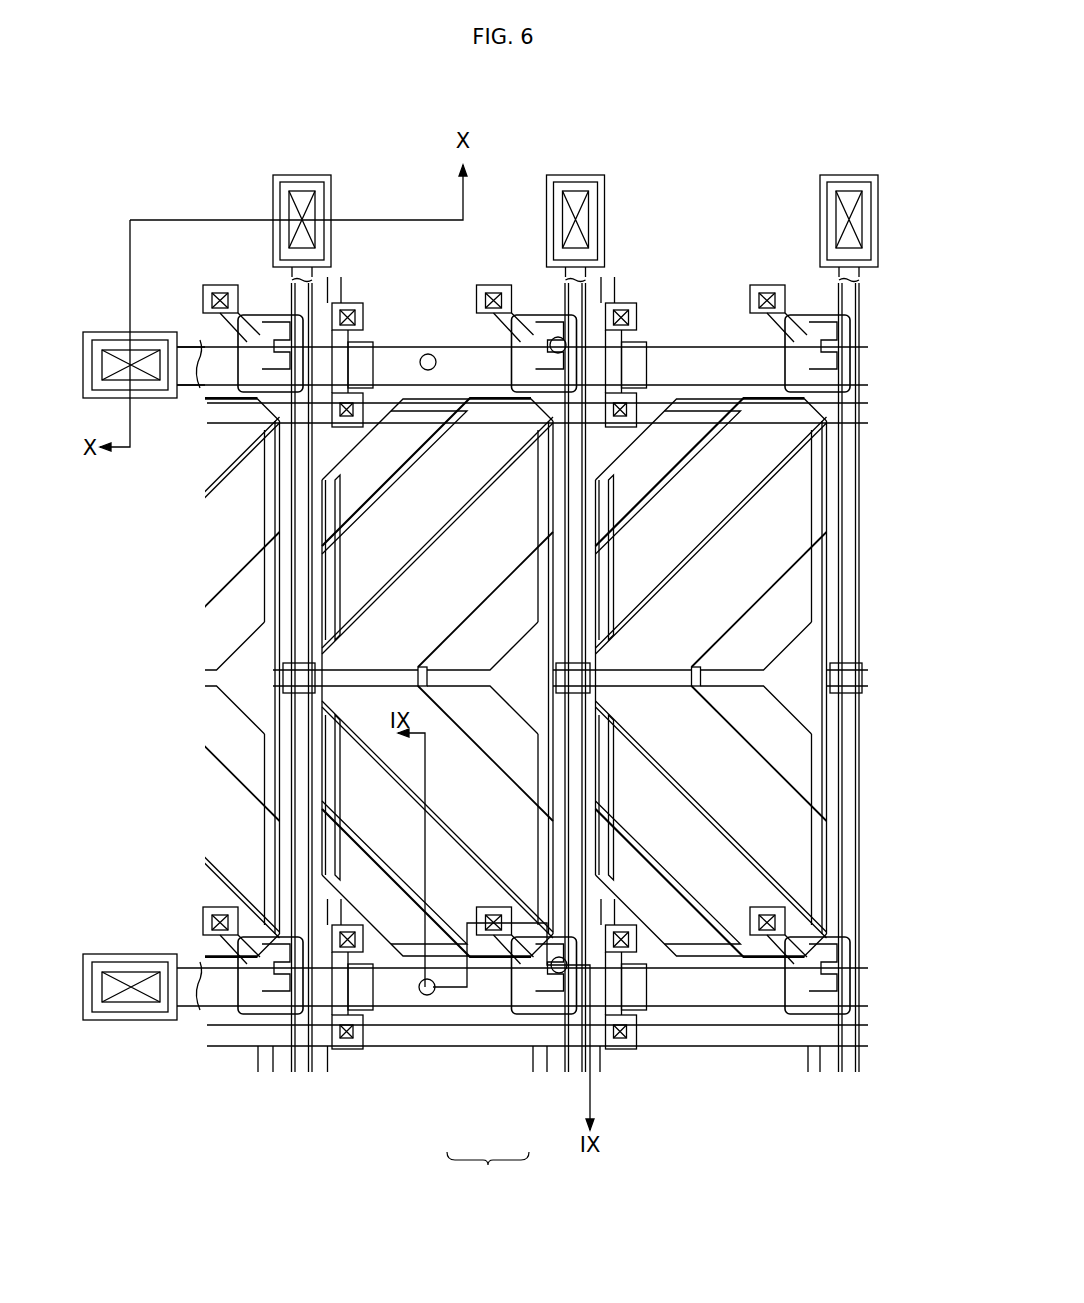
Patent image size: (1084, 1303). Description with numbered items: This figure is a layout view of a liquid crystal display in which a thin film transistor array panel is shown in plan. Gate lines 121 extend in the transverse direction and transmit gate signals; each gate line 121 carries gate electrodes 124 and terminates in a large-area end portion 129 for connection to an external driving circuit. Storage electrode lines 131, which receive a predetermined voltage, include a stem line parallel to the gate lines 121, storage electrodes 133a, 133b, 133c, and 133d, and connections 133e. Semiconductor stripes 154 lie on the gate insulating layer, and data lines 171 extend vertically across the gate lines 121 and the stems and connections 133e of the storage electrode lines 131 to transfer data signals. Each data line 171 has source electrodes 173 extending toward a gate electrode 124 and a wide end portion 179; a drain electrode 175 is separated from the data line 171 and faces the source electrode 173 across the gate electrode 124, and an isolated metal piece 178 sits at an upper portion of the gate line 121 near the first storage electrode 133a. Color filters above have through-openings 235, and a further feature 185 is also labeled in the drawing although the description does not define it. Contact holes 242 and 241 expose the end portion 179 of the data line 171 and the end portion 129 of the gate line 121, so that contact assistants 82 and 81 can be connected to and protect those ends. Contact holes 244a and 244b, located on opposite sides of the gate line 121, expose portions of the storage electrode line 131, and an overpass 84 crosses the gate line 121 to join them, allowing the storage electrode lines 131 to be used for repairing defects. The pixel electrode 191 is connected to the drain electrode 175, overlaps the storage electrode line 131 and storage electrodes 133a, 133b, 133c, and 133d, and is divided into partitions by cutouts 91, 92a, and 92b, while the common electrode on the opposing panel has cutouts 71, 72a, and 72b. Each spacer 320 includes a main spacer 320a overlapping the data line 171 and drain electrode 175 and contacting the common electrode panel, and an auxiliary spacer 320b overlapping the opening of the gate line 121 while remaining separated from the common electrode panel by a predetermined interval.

The cutout 71 is at (500, 605).
The cutout 72a is at (396, 834).
The cutout 72b is at (396, 474).
The contact assistant 81 is at (117, 332).
The contact assistant 82 is at (290, 175).
The overpass 84 is at (395, 1015).
The cutout 91 is at (470, 686).
The cutout 92a is at (408, 765).
The cutout 92b is at (440, 535).
The gate line 121 is at (690, 1010).
The gate electrode 124 is at (845, 1012).
The end portion 129 is at (152, 398).
The storage electrode line 131 is at (690, 410).
The storage electrode 133a is at (622, 583).
The storage electrode 133b is at (830, 590).
The storage electrode 133c is at (784, 843).
The storage electrode 133d is at (746, 508).
The connection 133e is at (850, 668).
The semiconductor stripe 154 is at (290, 625).
The data line 171 is at (290, 770).
The source electrode 173 is at (573, 1005).
The drain electrode 175 is at (490, 940).
The isolated metal piece 178 is at (327, 1047).
The end portion 179 is at (314, 185).
The contact hole 185 is at (757, 915).
The pixel electrode 191 is at (423, 960).
The through-opening 235 is at (800, 921).
The contact hole 241 is at (140, 348).
The contact hole 242 is at (314, 239).
The contact hole 244a is at (350, 1045).
The contact hole 244b is at (352, 928).
The spacer 320 is at (488, 1172).
The main spacer 320a is at (540, 972).
The auxiliary spacer 320b is at (480, 972).